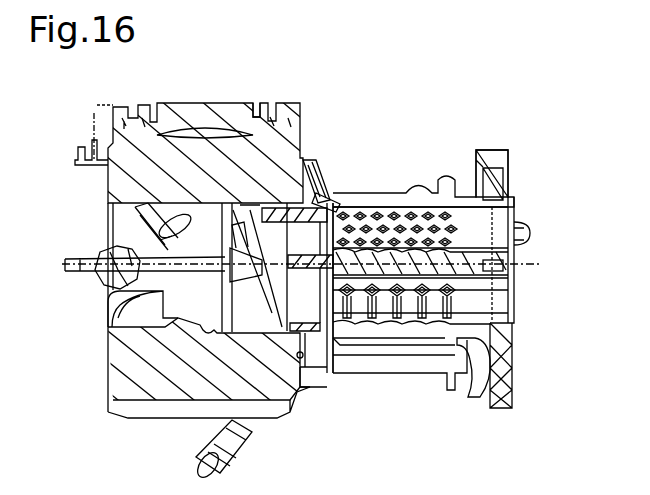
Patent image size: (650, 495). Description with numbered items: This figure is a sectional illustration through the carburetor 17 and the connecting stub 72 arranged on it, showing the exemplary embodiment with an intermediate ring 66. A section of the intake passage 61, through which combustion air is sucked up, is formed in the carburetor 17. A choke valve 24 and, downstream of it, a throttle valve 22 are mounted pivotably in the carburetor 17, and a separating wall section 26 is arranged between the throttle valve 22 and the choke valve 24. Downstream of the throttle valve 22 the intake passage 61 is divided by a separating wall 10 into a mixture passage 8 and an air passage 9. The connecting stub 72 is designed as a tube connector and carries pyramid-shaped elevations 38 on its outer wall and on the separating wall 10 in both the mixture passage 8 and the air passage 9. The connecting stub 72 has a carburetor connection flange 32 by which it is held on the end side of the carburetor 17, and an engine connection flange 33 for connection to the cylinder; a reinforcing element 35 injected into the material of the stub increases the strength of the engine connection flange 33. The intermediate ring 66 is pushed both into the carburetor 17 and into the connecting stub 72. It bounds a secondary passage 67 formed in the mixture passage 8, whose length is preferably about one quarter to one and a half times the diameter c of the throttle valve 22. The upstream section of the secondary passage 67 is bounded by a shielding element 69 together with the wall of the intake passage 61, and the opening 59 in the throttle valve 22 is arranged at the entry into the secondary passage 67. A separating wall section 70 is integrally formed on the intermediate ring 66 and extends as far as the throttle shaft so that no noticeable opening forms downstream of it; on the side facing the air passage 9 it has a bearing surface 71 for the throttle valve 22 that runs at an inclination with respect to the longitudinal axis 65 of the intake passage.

The mixture passage 8 is at (403, 213).
The air passage 9 is at (408, 305).
The separating wall 10 is at (492, 247).
The carburetor 17 is at (300, 150).
The throttle valve 22 is at (277, 333).
The choke valve 24 is at (80, 255).
The separating wall section 26 is at (135, 415).
The carburetor connection flange 32 is at (320, 190).
The engine connection flange 33 is at (488, 157).
The reinforcing element 35 is at (498, 190).
The pyramid-shaped elevations 38 is at (440, 225).
The opening in the throttle valve 59 is at (239, 212).
The intake passage 61 is at (123, 307).
The longitudinal axis of the intake passage 65 is at (530, 265).
The intermediate ring 66 is at (302, 355).
The secondary passage 67 is at (323, 197).
The shielding element 69 is at (262, 200).
The separating wall section 70 is at (352, 325).
The bearing surface 71 is at (322, 345).
The connecting stub 72 is at (367, 168).
The diameter of the throttle valve c is at (250, 303).